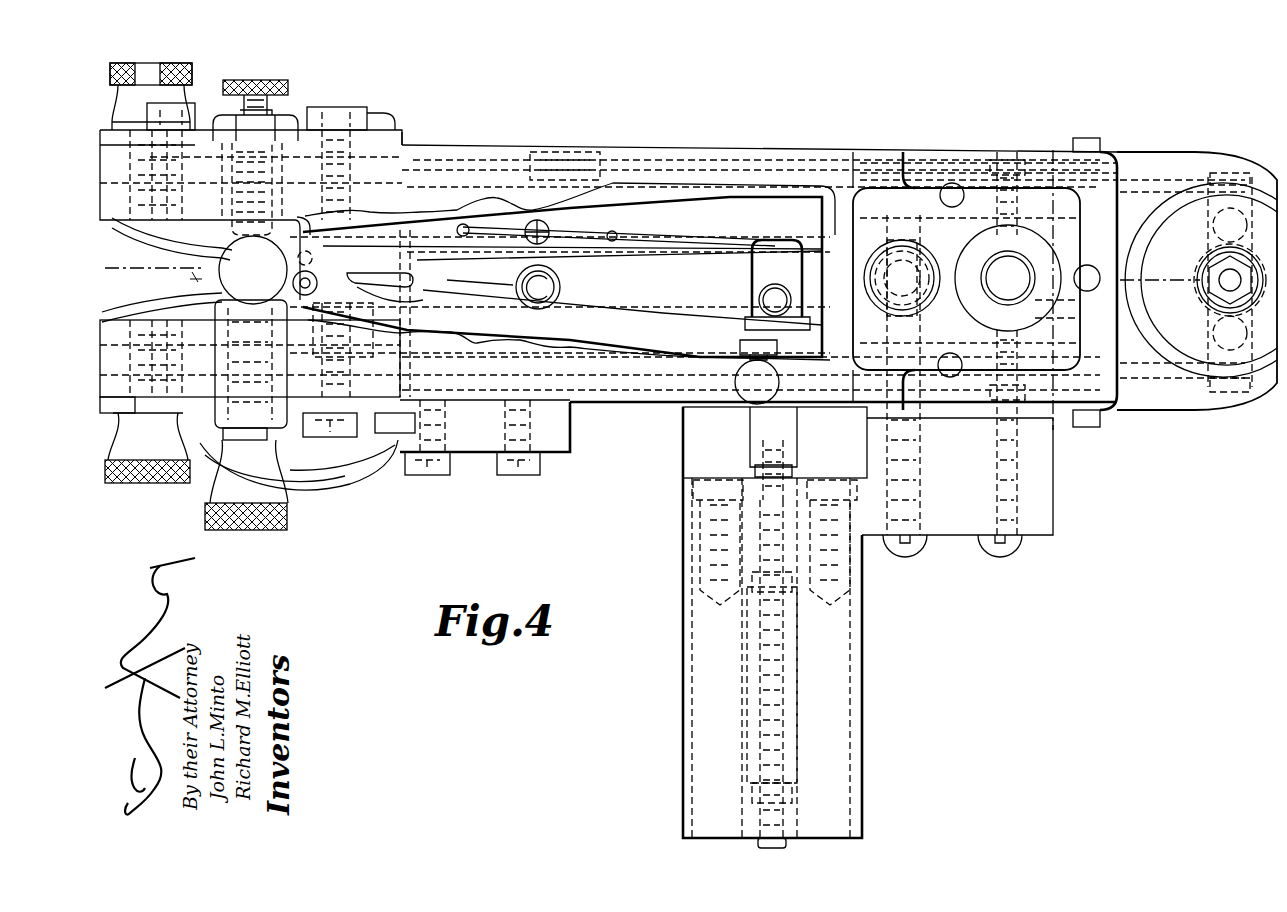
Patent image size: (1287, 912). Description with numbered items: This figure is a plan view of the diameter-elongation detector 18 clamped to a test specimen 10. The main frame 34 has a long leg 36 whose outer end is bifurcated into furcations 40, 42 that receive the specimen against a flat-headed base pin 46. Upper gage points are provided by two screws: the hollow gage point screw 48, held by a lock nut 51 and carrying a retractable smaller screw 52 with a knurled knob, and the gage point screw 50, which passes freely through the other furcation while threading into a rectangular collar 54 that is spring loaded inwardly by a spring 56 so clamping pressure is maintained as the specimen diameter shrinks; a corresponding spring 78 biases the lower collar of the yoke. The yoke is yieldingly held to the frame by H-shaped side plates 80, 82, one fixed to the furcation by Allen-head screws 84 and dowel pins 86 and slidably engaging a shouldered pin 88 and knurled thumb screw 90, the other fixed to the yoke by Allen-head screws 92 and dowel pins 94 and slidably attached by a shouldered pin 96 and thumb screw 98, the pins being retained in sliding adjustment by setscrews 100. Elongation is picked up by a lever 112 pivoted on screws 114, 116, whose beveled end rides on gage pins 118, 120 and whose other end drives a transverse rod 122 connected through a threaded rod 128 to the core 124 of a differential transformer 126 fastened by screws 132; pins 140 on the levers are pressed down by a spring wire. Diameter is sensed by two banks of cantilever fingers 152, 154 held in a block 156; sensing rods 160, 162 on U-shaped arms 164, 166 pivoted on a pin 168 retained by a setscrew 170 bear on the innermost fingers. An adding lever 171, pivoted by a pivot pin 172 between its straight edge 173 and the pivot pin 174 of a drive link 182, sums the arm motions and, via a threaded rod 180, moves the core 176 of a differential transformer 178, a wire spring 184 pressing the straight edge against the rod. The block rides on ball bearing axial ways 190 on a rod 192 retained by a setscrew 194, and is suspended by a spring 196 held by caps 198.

The specimen 10 is at (222, 255).
The diameter-elongation detector 18 is at (562, 531).
The main frame 34 is at (1117, 214).
The long leg 36 is at (579, 147).
The furcation 40 is at (216, 182).
The furcation 42 is at (122, 316).
The base pin 46 is at (290, 289).
The gage point screw 48 is at (280, 115).
The gage point screw 50 is at (288, 520).
The lock nut 51 is at (230, 121).
The smaller screw 52 is at (282, 84).
The rectangular collar 54 is at (212, 334).
The spring 56 is at (476, 452).
The spring 78 is at (395, 460).
The side plate 80 is at (405, 141).
The side plate 82 is at (116, 413).
The Allen-head screws 84 is at (185, 103).
The dowel pins 86 is at (398, 125).
The shouldered pin 88 is at (383, 112).
The knurled thumb screw 90 is at (185, 72).
The Allen-head screws 92 is at (297, 470).
The dowel pins 94 is at (155, 278).
The shouldered pin 96 is at (362, 437).
The thumb screw 98 is at (160, 483).
The setscrews 100 is at (404, 161).
The elongation pick-up lever 112 is at (485, 425).
The screw 114 is at (992, 165).
The screw 116 is at (1008, 405).
The gage pin 118 is at (232, 199).
The gage pin 120 is at (251, 370).
The transverse rod 122 is at (1230, 172).
The core 124 is at (1200, 272).
The differential transformer 126 is at (1262, 378).
The threaded rod 128 is at (1222, 290).
The screws 132 is at (1212, 229).
The pins 140 is at (533, 426).
The bank of cantilever fingers 152 is at (164, 243).
The bank of cantilever fingers 154 is at (185, 286).
The block 156 is at (1064, 331).
The sensing rod 160 is at (259, 270).
The sensing rod 162 is at (363, 314).
The U-shaped arm 164 is at (615, 195).
The U-shaped arm 166 is at (575, 345).
The pin 168 is at (803, 273).
The setscrew 170 is at (760, 263).
The adding lever 171 is at (644, 298).
The pivot pin 172 is at (516, 286).
The straight edge 173 is at (400, 285).
The pivot pin 174 is at (792, 301).
The core 176 is at (790, 706).
The differential transformer 178 is at (845, 633).
The threaded rod 180 is at (788, 842).
The drive link 182 is at (790, 448).
The wire spring 184 is at (633, 241).
The ball bearing axial ways 190 is at (1035, 250).
The rod 192 is at (1004, 270).
The setscrew 194 is at (1066, 307).
The spring 196 is at (886, 303).
The caps 198 is at (923, 264).